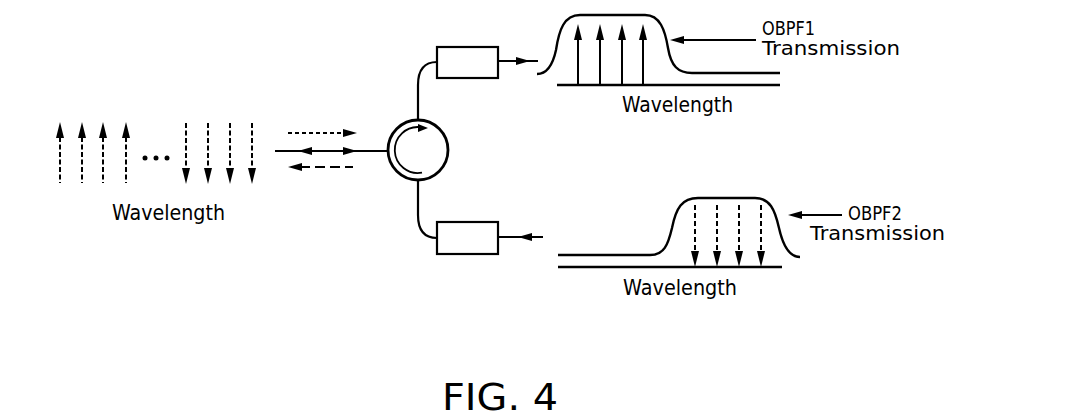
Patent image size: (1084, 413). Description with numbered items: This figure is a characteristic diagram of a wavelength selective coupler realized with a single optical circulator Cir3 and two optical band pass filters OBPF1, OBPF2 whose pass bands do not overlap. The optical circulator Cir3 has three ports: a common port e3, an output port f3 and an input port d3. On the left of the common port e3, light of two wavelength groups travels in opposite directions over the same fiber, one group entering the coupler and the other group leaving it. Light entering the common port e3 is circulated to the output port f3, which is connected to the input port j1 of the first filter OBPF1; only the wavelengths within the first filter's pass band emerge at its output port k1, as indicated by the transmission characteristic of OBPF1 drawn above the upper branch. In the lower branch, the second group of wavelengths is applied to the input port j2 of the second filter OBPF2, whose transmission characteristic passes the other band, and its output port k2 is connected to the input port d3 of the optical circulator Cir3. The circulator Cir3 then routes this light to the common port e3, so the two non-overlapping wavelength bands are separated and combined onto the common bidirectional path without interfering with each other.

The optical circulator Cir3 is at (437, 150).
The optical band pass filter OBPF1 is at (467, 48).
The optical band pass filter OBPF2 is at (467, 253).
The common port e3 is at (374, 163).
The output port f3 is at (417, 91).
The input port d3 is at (428, 209).
The input port j1 is at (428, 53).
The output port k1 is at (518, 50).
The input port j2 is at (520, 249).
The output port k2 is at (427, 247).